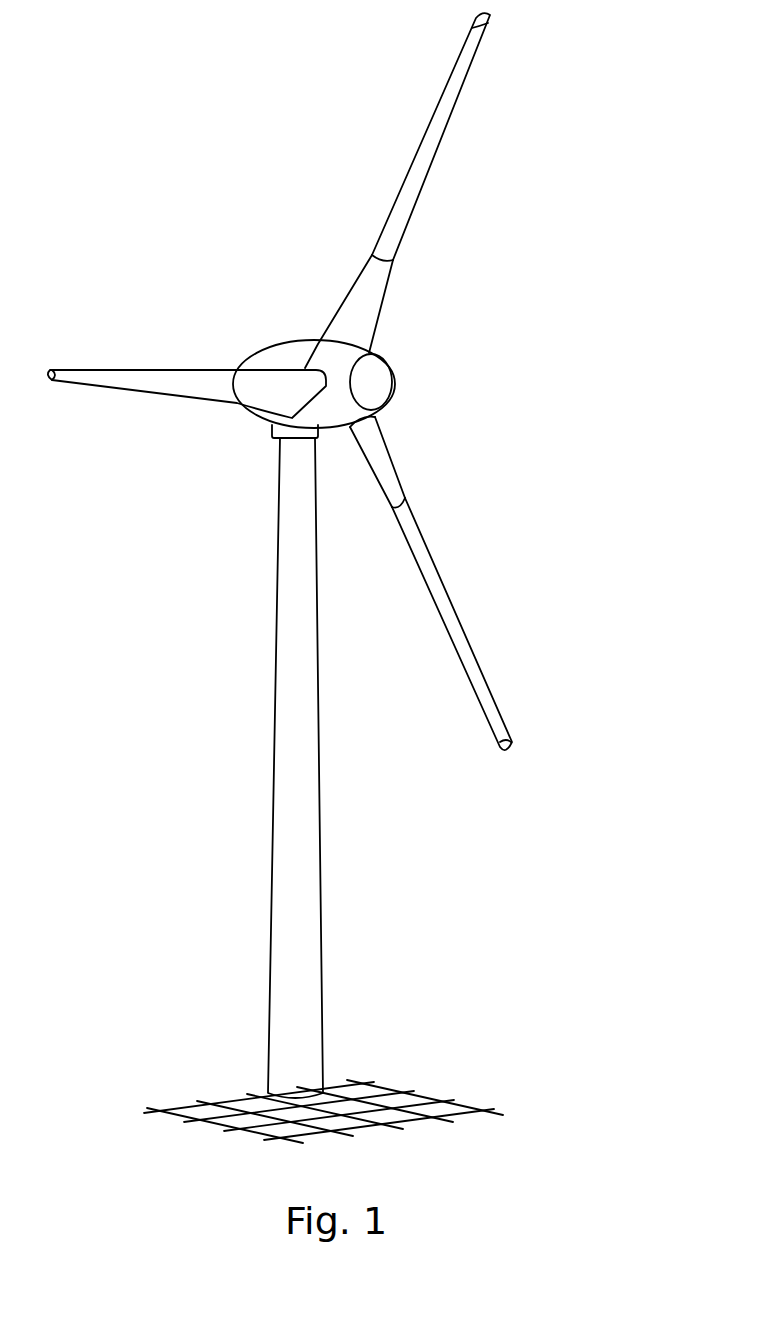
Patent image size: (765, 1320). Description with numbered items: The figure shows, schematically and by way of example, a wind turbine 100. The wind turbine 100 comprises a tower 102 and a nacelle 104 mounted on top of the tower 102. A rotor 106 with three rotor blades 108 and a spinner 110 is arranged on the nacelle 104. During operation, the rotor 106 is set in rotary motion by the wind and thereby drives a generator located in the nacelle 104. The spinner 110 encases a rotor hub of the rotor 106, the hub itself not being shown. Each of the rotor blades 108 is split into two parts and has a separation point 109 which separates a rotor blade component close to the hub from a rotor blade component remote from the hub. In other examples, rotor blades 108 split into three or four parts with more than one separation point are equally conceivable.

The wind turbine 100 is at (228, 513).
The tower 102 is at (302, 870).
The nacelle 104 is at (293, 352).
The rotor 106 is at (530, 240).
The rotor blades 108 is at (437, 140).
The separation point 109 is at (372, 255).
The spinner 110 is at (376, 380).